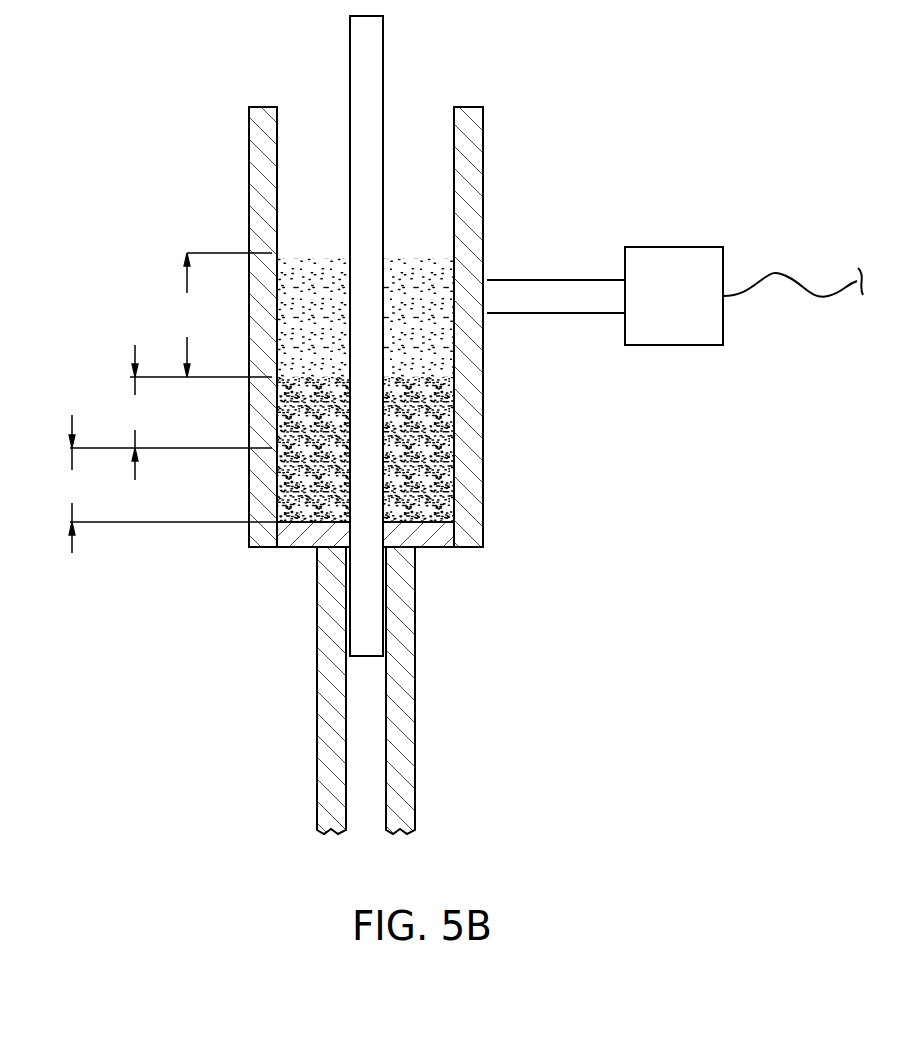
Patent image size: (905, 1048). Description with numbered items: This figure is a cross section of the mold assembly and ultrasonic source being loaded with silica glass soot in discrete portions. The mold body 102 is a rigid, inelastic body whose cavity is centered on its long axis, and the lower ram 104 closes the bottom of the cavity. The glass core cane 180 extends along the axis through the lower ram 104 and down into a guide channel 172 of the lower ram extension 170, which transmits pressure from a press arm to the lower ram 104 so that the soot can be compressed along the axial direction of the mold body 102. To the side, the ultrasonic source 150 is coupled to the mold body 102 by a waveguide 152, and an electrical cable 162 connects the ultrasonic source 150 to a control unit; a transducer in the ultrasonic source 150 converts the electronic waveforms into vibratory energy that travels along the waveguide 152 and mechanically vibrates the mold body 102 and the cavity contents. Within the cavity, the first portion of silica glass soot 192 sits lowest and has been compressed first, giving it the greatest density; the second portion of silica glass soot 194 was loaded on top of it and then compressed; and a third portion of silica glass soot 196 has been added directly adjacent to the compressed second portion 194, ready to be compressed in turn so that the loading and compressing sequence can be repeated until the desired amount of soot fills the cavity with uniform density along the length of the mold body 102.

The mold body 102 is at (483, 148).
The lower ram 104 is at (285, 548).
The ultrasonic source 150 is at (673, 247).
The waveguide 152 is at (550, 313).
The electrical cable 162 is at (780, 272).
The lower ram extension 170 is at (415, 685).
The guide channel 172 is at (375, 762).
The glass core cane 180 is at (383, 27).
The first portion of silica glass soot 192 is at (164, 484).
The second portion of silica glass soot 194 is at (171, 412).
The third portion of silica glass soot 196 is at (201, 315).